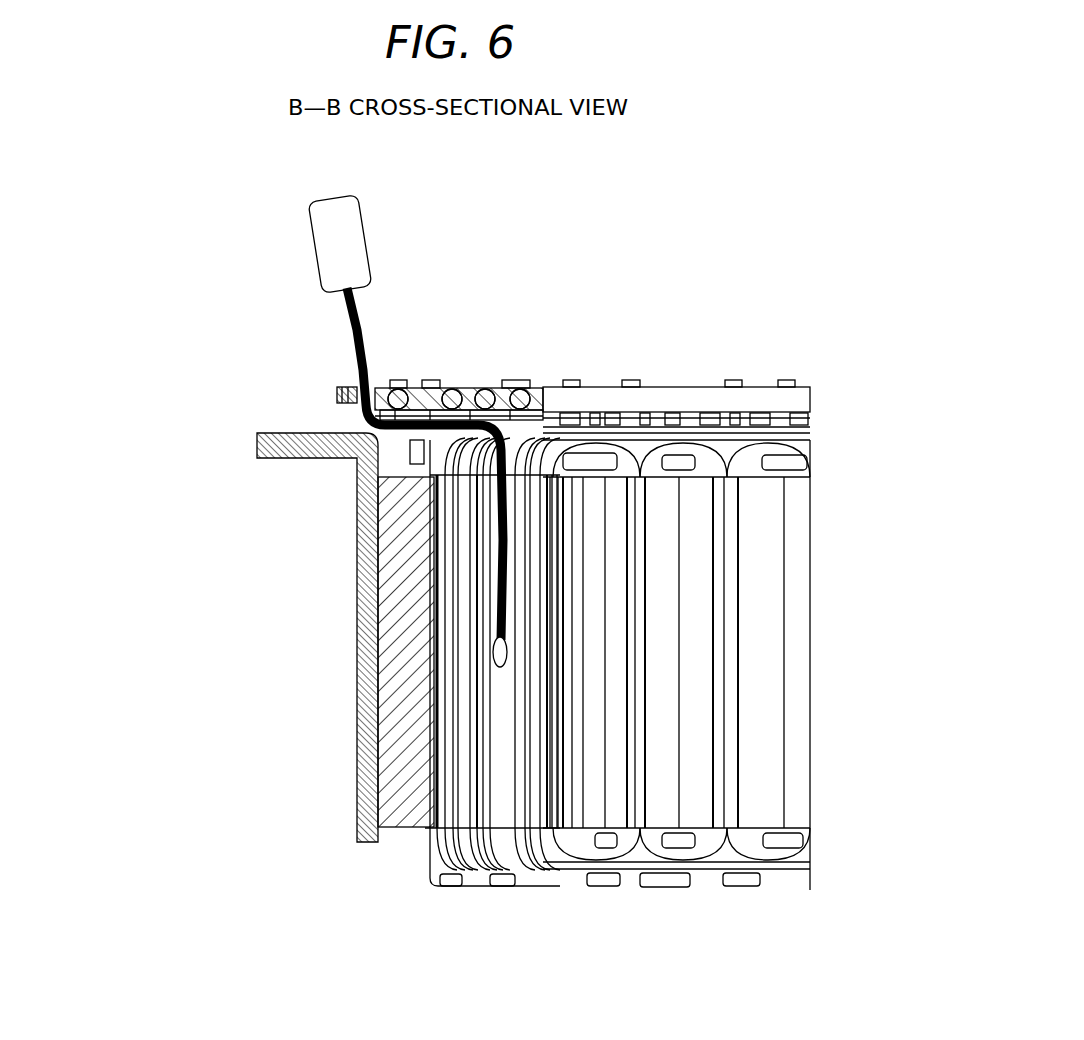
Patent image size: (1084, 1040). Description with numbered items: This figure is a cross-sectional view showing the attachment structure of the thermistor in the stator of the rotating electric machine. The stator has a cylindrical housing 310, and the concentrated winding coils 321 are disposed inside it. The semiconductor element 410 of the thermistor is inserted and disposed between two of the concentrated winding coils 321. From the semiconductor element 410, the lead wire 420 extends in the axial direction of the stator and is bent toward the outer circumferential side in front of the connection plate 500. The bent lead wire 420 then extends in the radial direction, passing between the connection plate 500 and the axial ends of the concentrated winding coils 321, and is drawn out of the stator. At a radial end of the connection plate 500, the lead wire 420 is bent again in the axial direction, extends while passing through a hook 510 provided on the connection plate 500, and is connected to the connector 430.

The housing 310 is at (357, 697).
The concentrated winding coils 321 is at (502, 773).
The semiconductor element 410 is at (497, 648).
The lead wire 420 is at (395, 428).
The connector 430 is at (310, 259).
The connection plate 500 is at (658, 383).
The hook 510 is at (336, 388).